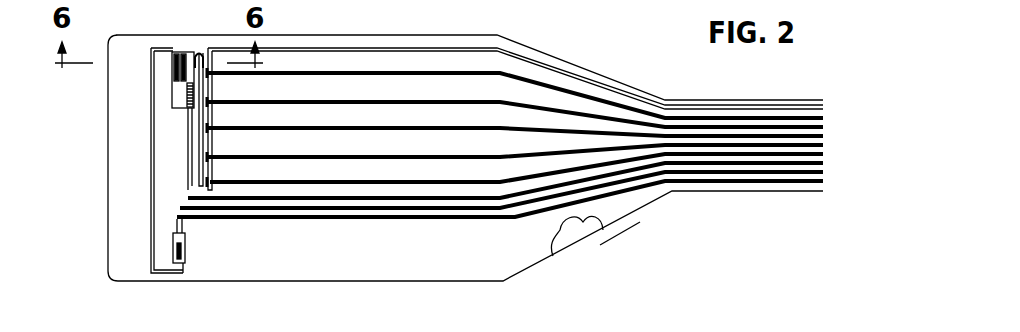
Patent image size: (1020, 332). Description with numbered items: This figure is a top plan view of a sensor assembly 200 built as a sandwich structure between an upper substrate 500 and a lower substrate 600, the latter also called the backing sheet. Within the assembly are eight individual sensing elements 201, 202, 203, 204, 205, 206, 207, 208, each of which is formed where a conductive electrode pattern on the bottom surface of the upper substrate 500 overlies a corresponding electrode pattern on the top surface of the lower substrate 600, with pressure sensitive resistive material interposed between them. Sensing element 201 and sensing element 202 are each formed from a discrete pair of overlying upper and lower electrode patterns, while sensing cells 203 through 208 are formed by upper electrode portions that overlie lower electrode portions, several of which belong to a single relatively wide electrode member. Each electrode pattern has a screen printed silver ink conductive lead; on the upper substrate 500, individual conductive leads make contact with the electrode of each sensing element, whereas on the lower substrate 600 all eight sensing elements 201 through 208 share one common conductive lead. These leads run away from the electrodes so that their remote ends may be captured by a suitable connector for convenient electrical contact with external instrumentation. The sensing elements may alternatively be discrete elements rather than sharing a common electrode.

The sensor assembly 200 is at (652, 94).
The sensing element 201 is at (183, 251).
The sensing element 202 is at (185, 95).
The sensing element 203 is at (177, 65).
The sensing element 204 is at (212, 138).
The sensing element 205 is at (213, 168).
The sensing element 206 is at (207, 116).
The sensing element 207 is at (213, 91).
The sensing element 208 is at (197, 56).
The upper substrate 500 is at (627, 206).
The lower substrate 600 is at (573, 236).